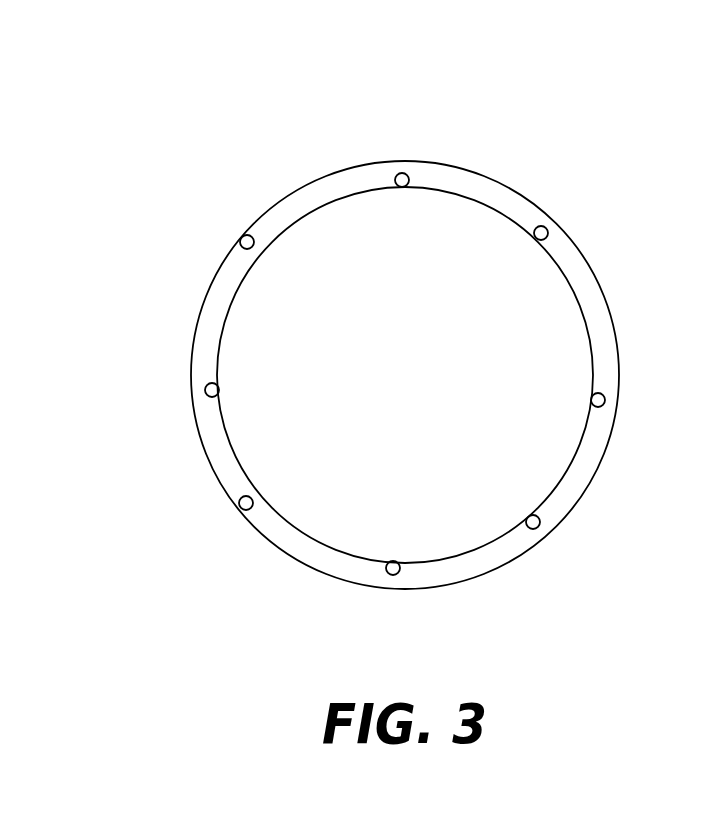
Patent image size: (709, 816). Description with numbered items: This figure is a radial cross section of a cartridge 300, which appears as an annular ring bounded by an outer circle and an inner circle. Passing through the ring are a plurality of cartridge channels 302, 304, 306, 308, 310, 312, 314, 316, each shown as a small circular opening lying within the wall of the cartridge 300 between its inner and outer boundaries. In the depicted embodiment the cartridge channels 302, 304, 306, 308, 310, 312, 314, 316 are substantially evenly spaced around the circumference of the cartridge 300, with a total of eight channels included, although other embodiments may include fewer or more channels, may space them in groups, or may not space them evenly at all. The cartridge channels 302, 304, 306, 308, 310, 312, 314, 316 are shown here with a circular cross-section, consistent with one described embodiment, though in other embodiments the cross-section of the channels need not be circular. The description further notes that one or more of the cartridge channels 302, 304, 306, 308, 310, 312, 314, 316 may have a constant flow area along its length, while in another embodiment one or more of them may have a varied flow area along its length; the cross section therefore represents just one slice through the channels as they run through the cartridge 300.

The cartridge 300 is at (576, 162).
The cartridge channel 302 is at (404, 173).
The cartridge channel 304 is at (548, 233).
The cartridge channel 306 is at (603, 405).
The cartridge channel 308 is at (533, 530).
The cartridge channel 310 is at (387, 570).
The cartridge channel 312 is at (238, 506).
The cartridge channel 314 is at (205, 390).
The cartridge channel 316 is at (240, 240).